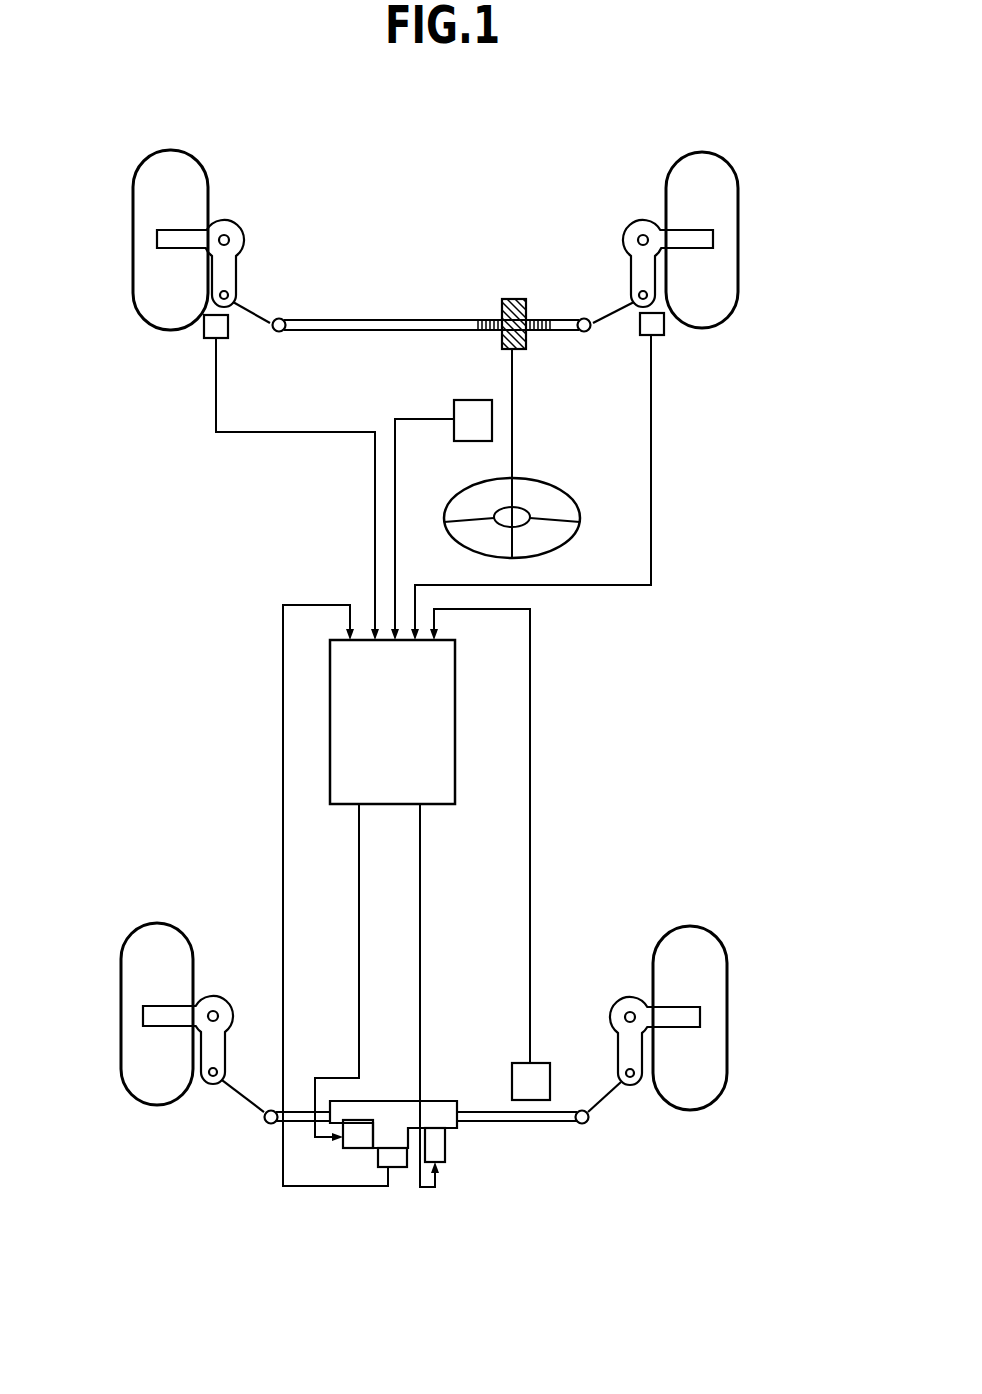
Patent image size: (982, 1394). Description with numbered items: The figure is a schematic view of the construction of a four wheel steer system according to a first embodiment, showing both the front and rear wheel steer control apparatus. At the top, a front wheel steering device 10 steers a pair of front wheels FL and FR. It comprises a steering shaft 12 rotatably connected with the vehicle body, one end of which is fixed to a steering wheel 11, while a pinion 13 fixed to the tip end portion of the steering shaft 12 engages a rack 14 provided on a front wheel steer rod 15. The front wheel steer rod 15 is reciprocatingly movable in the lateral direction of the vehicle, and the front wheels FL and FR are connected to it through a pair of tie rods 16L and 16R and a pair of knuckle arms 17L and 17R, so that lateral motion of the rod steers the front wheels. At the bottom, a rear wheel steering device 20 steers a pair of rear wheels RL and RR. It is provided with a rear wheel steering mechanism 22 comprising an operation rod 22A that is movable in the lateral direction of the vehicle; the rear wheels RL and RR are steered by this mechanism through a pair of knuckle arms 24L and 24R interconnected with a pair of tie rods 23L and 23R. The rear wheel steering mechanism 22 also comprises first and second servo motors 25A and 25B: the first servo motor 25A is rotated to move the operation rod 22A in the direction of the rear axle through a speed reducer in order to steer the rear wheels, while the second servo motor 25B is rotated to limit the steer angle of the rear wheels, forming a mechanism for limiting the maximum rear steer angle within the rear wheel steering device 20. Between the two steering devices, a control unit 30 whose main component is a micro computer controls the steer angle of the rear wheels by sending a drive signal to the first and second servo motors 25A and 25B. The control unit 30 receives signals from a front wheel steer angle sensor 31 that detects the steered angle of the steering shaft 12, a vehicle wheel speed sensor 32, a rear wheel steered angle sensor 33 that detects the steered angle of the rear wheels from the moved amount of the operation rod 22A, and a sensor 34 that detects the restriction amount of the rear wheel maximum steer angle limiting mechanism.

The front wheel steering device 10 is at (471, 272).
The steering wheel 11 is at (565, 535).
The steering shaft 12 is at (514, 432).
The pinion 13 is at (527, 340).
The rack 14 is at (538, 318).
The front wheel steer rod 15 is at (380, 318).
The tie rod 16L is at (258, 307).
The tie rod 16R is at (613, 318).
The knuckle arm 17L is at (243, 228).
The knuckle arm 17R is at (625, 228).
The rear wheel steering device 20 is at (364, 1195).
The rear wheel steering mechanism 22 is at (386, 1100).
The operation rod 22A is at (510, 1123).
The tie rod 23L is at (236, 1097).
The tie rod 23R is at (605, 1098).
The knuckle arm 24L is at (215, 997).
The knuckle arm 24R is at (625, 998).
The first servo motor 25A is at (352, 1147).
The second servo motor 25B is at (448, 1150).
The control unit 30 is at (410, 729).
The front wheel steer angle sensor 31 is at (472, 400).
The vehicle wheel speed sensor 32 is at (230, 325).
The rear wheel steered angle sensor 33 is at (517, 1063).
The sensor 34 is at (397, 1168).
The front wheel FL is at (152, 155).
The front wheel FR is at (738, 168).
The rear wheel RL is at (118, 1046).
The rear wheel RR is at (715, 1072).